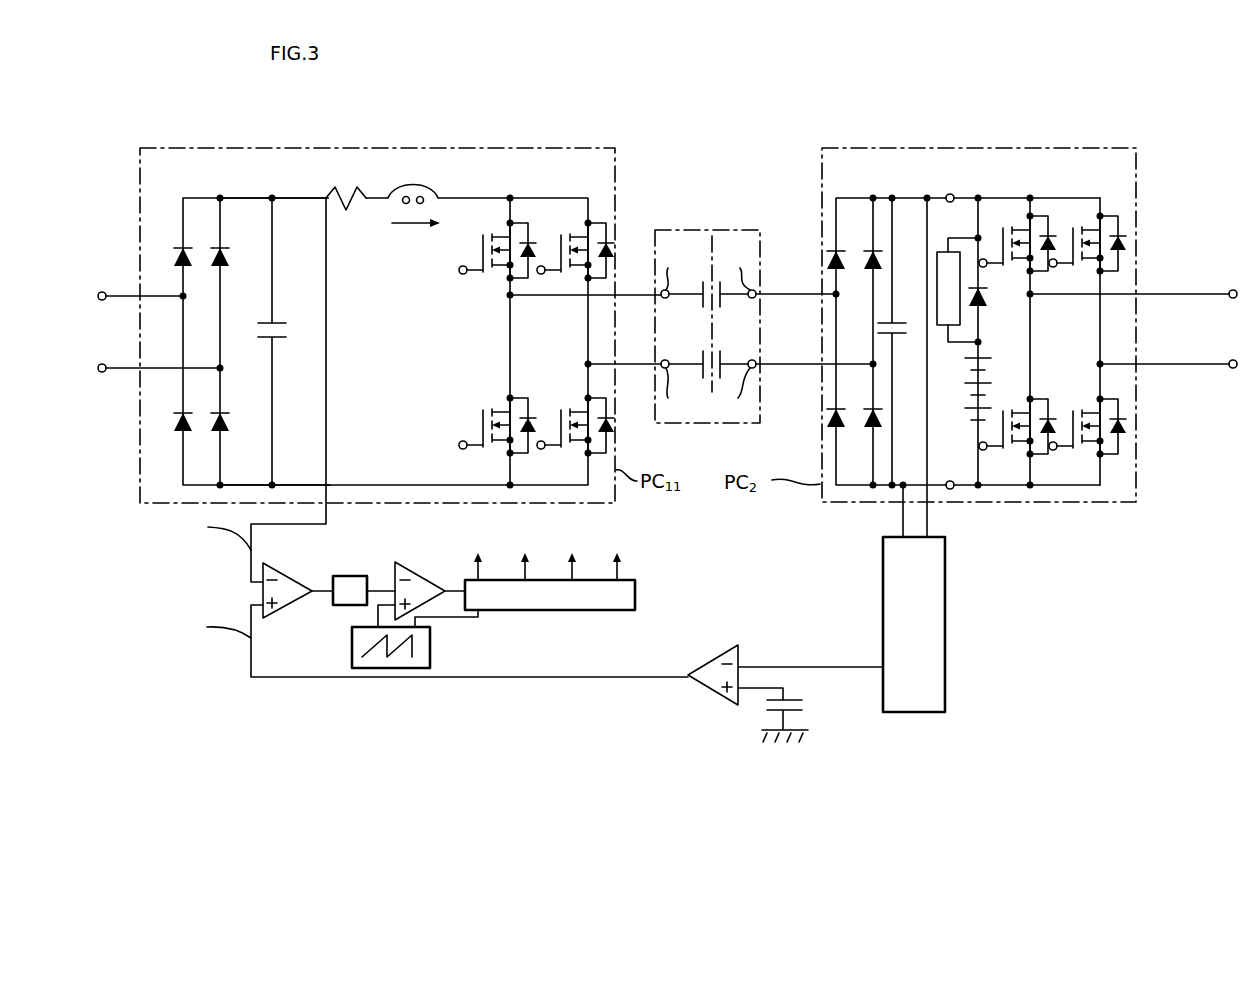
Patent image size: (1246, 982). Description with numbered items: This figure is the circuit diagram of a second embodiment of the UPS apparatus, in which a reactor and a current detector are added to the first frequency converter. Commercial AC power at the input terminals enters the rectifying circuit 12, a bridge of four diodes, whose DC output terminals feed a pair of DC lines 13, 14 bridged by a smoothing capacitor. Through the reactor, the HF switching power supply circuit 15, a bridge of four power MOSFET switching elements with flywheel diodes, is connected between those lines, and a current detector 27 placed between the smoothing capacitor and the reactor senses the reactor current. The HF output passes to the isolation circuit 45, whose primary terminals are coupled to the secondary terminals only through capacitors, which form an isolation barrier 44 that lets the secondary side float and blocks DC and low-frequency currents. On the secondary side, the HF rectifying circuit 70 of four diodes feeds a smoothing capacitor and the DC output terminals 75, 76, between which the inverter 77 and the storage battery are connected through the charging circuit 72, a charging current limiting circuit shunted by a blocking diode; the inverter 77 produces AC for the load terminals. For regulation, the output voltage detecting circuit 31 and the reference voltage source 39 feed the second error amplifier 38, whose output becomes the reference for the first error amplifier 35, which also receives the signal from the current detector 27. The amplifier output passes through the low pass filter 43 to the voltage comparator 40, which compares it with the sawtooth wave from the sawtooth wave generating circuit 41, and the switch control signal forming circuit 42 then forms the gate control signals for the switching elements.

The rectifying circuit 12 is at (339, 321).
The DC line 13 is at (264, 196).
The DC line 14 is at (237, 483).
The HF switching power supply circuit 15 is at (548, 322).
The current detector 27 is at (330, 205).
The output voltage detecting circuit 31 is at (883, 628).
The first error amplifier 35 is at (262, 592).
The second error amplifier 38 is at (714, 692).
The reference voltage source 39 is at (793, 711).
The voltage comparator 40 is at (405, 566).
The sawtooth wave generating circuit 41 is at (430, 645).
The switch control signal forming circuit 42 is at (635, 596).
The low pass filter 43 is at (340, 576).
The isolation barrier 44 is at (702, 305).
The isolation circuit 45 is at (707, 290).
The HF rectifying circuit 70 is at (859, 320).
The charging circuit 72 is at (944, 250).
The DC output terminal 75 is at (953, 194).
The DC output terminal 76 is at (949, 481).
The inverter 77 is at (1052, 320).